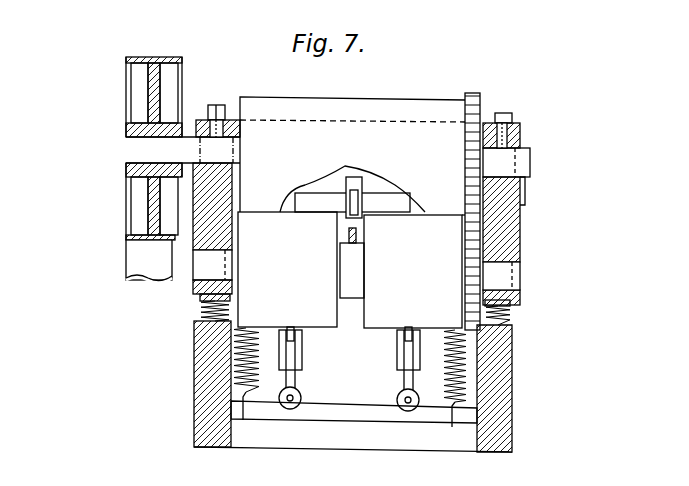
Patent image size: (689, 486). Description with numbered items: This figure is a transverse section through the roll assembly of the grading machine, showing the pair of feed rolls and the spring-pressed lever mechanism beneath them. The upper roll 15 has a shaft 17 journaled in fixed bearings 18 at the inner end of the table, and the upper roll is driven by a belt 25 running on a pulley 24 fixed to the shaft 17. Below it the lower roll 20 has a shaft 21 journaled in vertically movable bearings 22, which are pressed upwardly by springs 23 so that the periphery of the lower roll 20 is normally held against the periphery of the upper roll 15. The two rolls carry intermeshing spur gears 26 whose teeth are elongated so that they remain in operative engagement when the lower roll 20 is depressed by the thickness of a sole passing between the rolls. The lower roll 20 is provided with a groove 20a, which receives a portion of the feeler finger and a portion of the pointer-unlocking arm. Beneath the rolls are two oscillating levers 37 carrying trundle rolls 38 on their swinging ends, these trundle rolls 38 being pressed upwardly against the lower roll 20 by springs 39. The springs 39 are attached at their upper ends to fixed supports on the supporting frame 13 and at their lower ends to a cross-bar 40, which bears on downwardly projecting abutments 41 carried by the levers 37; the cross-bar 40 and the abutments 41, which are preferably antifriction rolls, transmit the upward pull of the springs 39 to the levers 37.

The supporting frame 13 is at (194, 358).
The upper roll 15 is at (258, 100).
The shaft 17 is at (138, 149).
The fixed bearings 18 is at (200, 120).
The lower roll 20 is at (253, 212).
The groove 20a is at (348, 312).
The shaft 21 is at (205, 268).
The vertically movable bearings 22 is at (200, 300).
The springs 23 is at (200, 321).
The pulley 24 is at (126, 78).
The belt 25 is at (365, 205).
The intermeshing spur gears 26 is at (480, 103).
The levers 37 is at (302, 364).
The trundle rolls 38 is at (290, 330).
The springs 39 is at (238, 378).
The cross-bar 40 is at (330, 414).
The abutments 41 is at (298, 402).